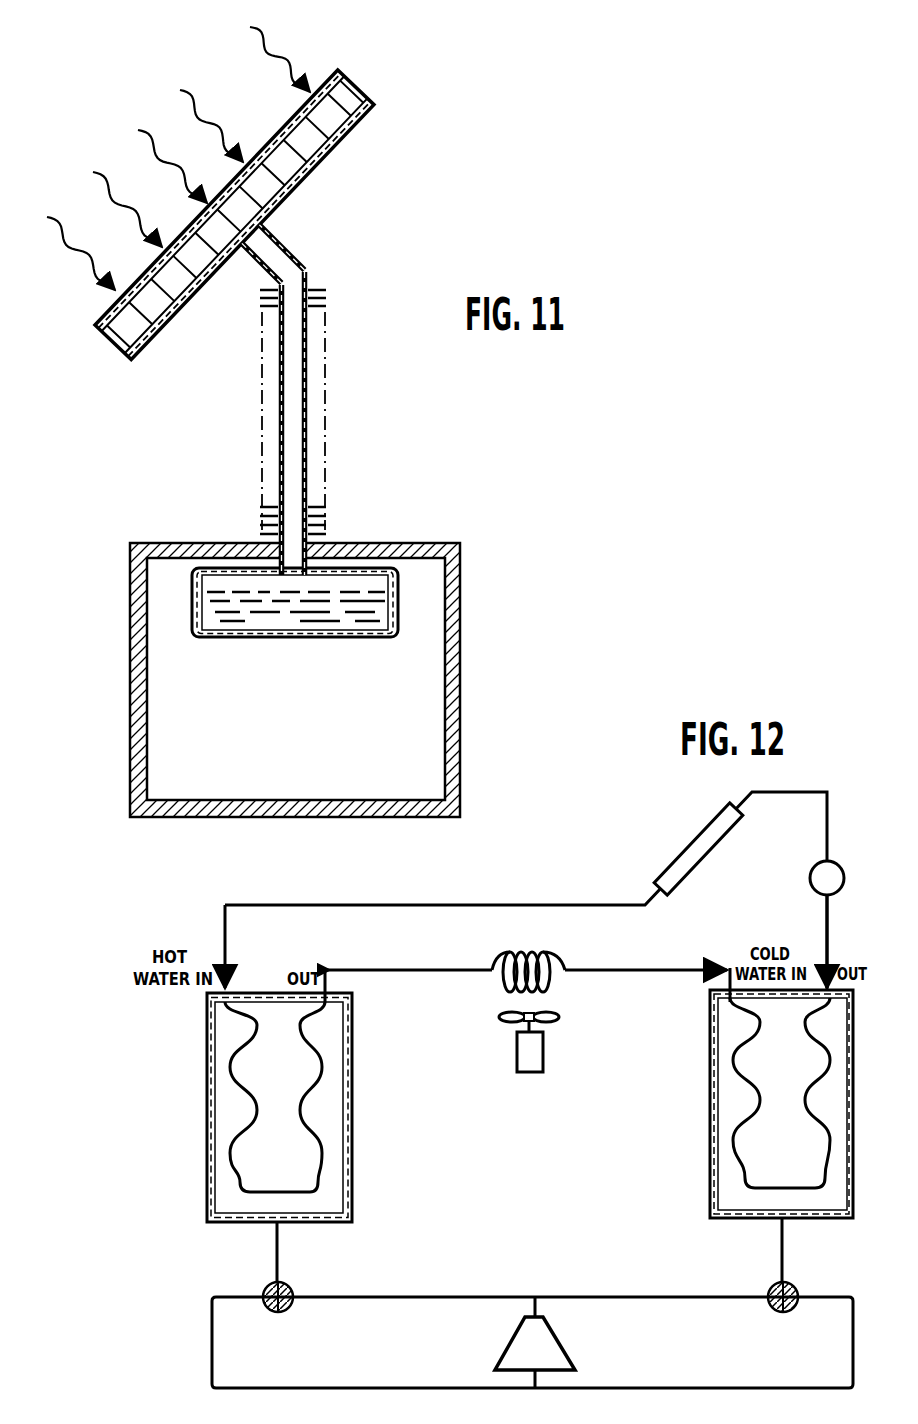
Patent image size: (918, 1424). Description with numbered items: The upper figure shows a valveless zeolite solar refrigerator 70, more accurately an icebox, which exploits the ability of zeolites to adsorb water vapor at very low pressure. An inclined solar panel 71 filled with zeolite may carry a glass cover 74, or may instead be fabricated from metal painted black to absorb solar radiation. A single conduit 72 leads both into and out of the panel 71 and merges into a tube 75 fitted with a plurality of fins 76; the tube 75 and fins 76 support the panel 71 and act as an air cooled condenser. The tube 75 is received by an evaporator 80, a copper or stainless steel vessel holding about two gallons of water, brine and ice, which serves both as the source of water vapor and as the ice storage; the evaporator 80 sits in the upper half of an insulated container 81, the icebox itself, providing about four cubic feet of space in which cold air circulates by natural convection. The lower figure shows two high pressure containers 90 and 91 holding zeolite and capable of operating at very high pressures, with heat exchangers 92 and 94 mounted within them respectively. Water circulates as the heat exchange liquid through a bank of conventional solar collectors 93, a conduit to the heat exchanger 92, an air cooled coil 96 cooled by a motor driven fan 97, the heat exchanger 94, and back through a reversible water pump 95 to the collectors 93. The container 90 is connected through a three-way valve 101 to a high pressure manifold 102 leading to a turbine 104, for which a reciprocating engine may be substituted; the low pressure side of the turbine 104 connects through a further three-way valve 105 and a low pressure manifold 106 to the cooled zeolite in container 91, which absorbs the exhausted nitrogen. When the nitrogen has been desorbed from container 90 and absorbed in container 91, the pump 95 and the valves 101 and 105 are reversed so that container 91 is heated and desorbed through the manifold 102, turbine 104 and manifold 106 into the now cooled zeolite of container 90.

In FIG. 11, the solar refrigerator 70 is at (409, 522).
In FIG. 11, the solar panel 71 is at (227, 200).
In FIG. 11, the conduit 72 is at (290, 257).
In FIG. 11, the glass cover 74 is at (289, 121).
In FIG. 11, the tube 75 is at (308, 413).
In FIG. 11, the fins 76 is at (326, 303).
In FIG. 11, the evaporator 80 is at (374, 573).
In FIG. 11, the insulated container 81 is at (460, 608).
In FIG. 12, the high pressure container 90 is at (297, 1107).
In FIG. 12, the high pressure container 91 is at (767, 1104).
In FIG. 12, the heat exchanger 92 is at (322, 1165).
In FIG. 12, the bank of solar collectors 93 is at (684, 848).
In FIG. 12, the heat exchanger 94 is at (730, 1103).
In FIG. 12, the reversible water pump 95 is at (845, 877).
In FIG. 12, the air cooled coil 96 is at (560, 960).
In FIG. 12, the motor driven fan 97 is at (544, 1055).
In FIG. 12, the three-way valve 101 is at (287, 1291).
In FIG. 12, the high pressure manifold 102 is at (481, 1293).
In FIG. 12, the turbine 104 is at (590, 1343).
In FIG. 12, the three-way valve 105 is at (797, 1290).
In FIG. 12, the low pressure manifold 106 is at (441, 1387).